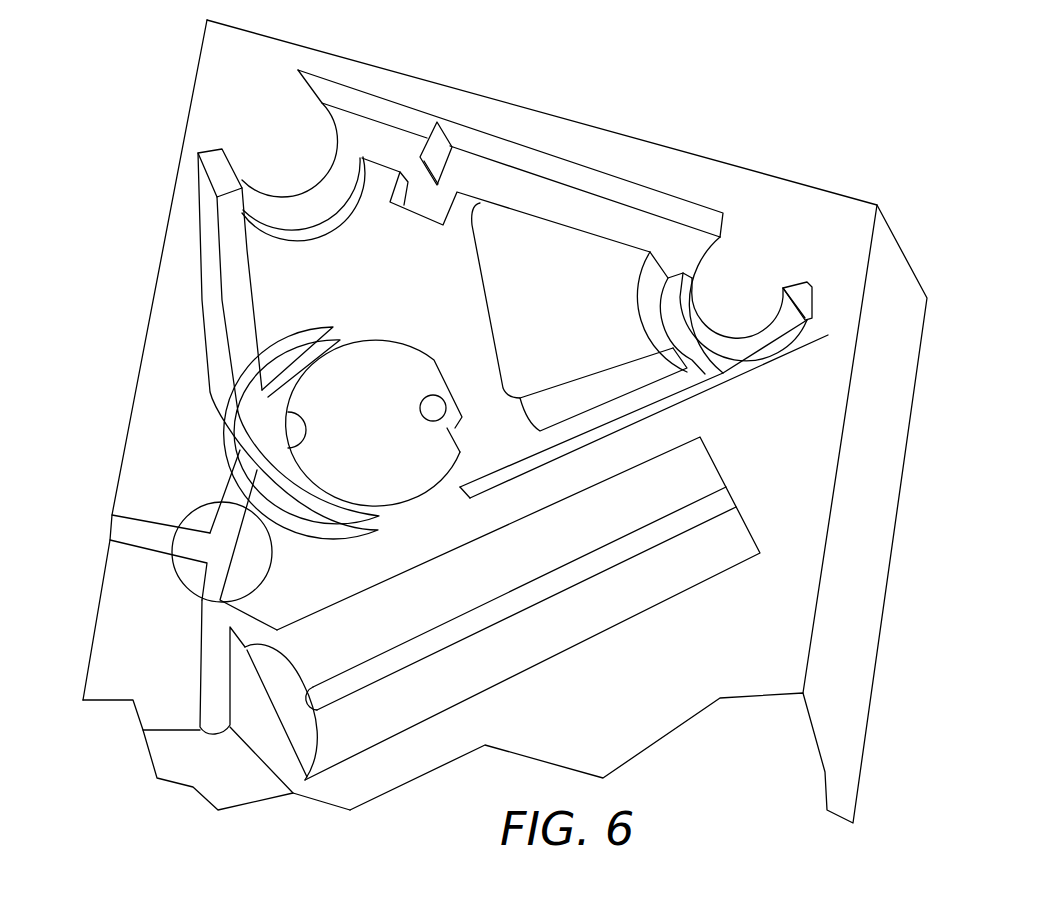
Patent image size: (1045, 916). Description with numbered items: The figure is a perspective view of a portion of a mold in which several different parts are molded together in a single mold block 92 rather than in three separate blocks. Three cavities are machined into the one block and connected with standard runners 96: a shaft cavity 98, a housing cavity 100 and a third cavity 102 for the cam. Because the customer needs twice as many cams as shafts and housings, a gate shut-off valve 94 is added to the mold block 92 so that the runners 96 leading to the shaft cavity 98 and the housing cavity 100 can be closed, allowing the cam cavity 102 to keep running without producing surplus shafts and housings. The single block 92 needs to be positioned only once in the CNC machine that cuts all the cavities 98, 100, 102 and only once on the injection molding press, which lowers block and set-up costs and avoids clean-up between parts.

The mold block 92 is at (405, 62).
The gate shut-off valve 94 is at (207, 520).
The runners 96 is at (208, 630).
The shaft cavity 98 is at (413, 705).
The housing cavity 100 is at (210, 767).
The cavity 102 is at (505, 173).